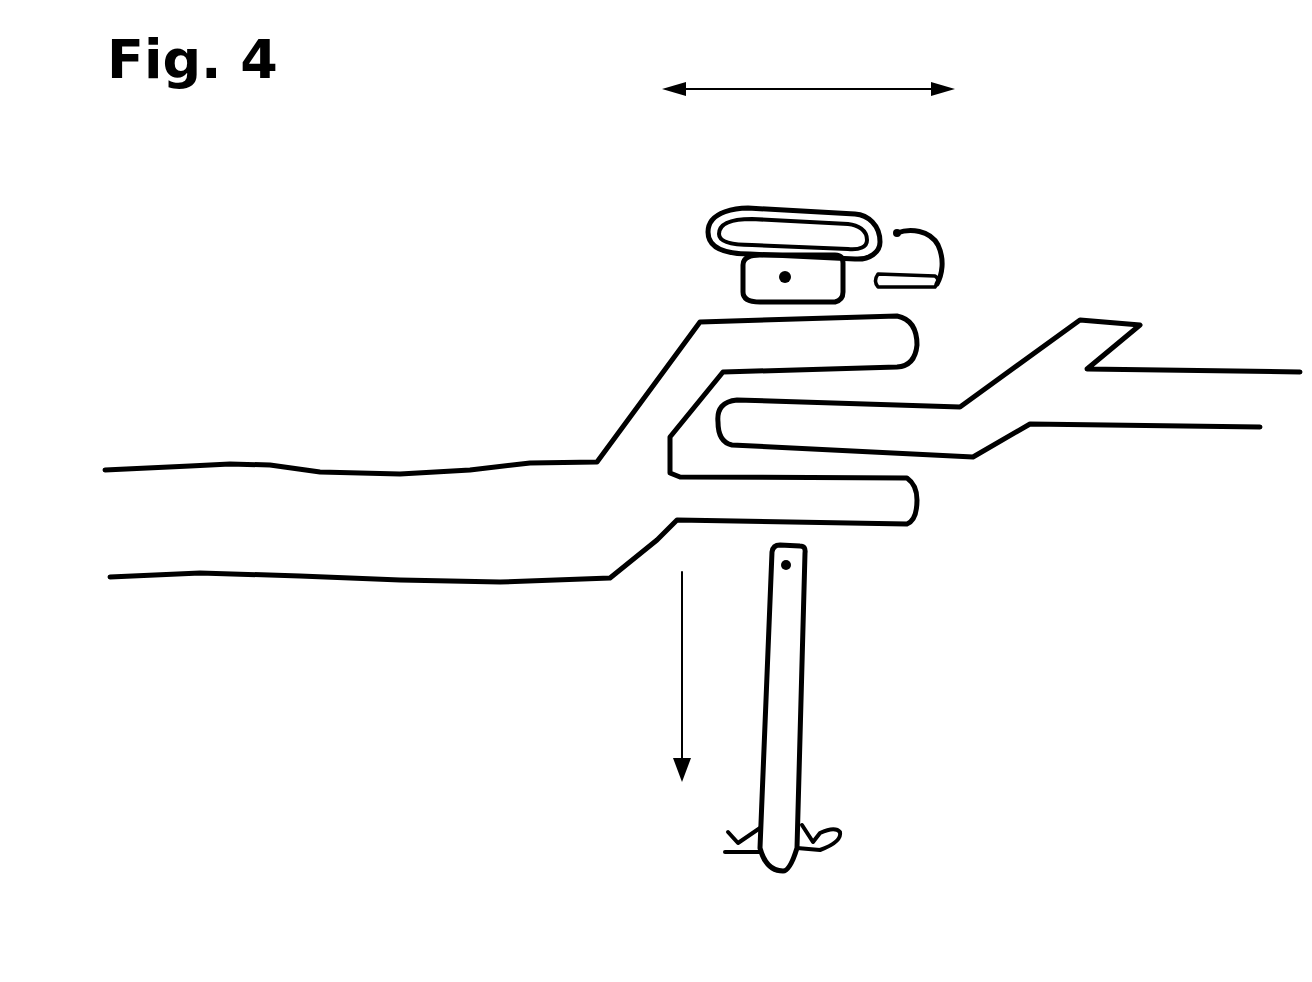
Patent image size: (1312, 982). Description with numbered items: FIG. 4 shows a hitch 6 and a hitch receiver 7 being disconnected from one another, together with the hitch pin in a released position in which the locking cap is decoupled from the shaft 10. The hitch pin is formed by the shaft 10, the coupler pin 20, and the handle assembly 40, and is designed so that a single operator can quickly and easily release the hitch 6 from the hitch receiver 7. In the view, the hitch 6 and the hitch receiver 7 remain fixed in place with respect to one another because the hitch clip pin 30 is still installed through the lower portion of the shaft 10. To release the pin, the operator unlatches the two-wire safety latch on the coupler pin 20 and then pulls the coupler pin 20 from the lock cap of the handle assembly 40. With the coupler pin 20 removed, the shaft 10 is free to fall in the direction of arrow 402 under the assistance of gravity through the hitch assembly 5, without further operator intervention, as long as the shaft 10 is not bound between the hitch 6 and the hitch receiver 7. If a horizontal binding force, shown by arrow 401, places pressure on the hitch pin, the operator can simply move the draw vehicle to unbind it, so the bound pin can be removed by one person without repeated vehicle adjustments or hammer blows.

The hitch assembly 5 is at (1108, 674).
The hitch 6 is at (960, 435).
The hitch receiver 7 is at (633, 470).
The shaft 10 is at (843, 628).
The coupler pin 20 is at (953, 262).
The hitch clip pin 30 is at (853, 837).
The handle assembly 40 is at (720, 280).
The arrow 401 is at (808, 70).
The arrow 402 is at (655, 677).